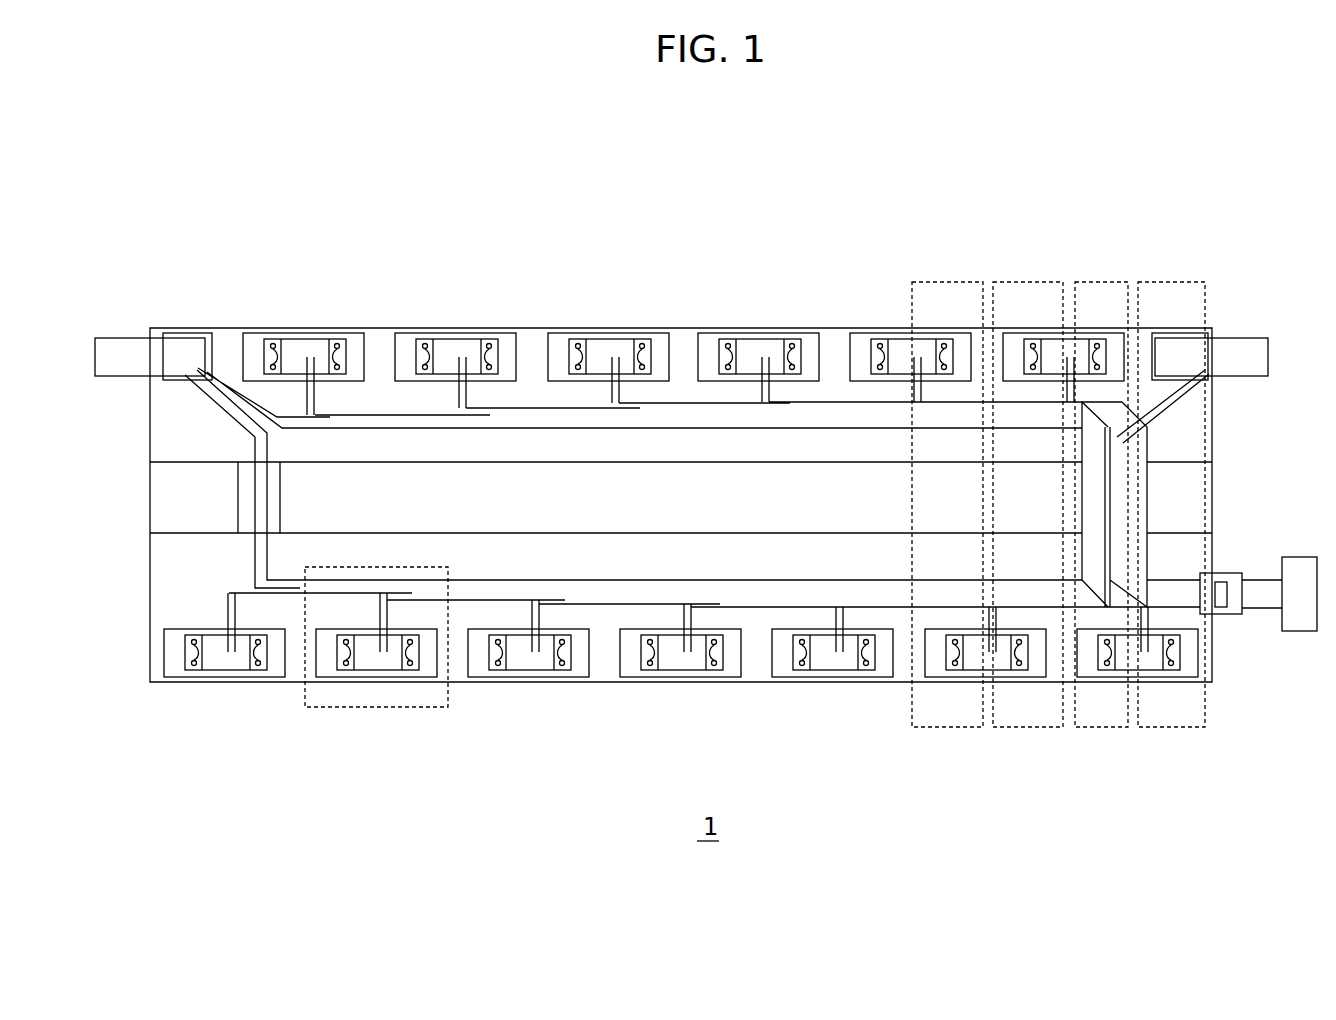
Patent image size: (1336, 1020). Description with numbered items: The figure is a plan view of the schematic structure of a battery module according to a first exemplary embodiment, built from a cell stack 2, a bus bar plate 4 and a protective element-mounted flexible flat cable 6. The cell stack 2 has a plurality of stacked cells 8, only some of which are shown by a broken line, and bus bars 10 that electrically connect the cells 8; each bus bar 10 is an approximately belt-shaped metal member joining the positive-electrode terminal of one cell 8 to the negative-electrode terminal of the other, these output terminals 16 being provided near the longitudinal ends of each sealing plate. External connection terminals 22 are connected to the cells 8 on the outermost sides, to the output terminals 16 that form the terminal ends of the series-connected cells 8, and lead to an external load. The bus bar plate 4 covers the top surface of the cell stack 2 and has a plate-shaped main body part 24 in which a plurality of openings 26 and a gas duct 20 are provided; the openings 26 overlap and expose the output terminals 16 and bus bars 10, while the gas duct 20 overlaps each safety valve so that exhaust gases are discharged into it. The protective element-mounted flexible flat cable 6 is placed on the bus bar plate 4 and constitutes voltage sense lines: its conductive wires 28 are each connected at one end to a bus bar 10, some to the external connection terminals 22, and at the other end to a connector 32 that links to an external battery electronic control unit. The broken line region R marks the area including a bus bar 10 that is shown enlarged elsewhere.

The cell stack 2 is at (1030, 280).
The bus bar plate 4 is at (1216, 422).
The protective element-mounted flexible flat cable 6 is at (1216, 574).
The cell 8 is at (1031, 727).
The bus bar 10 is at (870, 340).
The output terminal 16 is at (940, 678).
The gas duct 20 is at (1195, 497).
The external connection terminal 22 is at (118, 337).
The main body part 24 is at (150, 563).
The opening 26 is at (322, 648).
The conductive wire 28 is at (366, 650).
The connector 32 is at (1302, 632).
The broken line region R is at (456, 695).